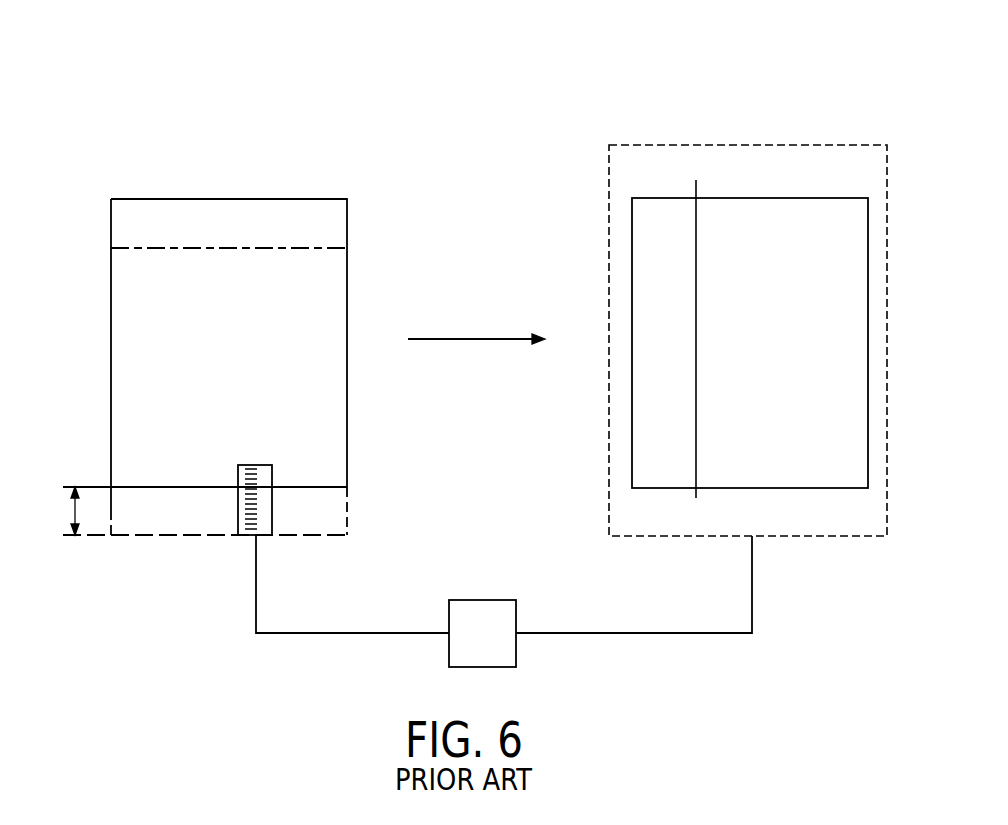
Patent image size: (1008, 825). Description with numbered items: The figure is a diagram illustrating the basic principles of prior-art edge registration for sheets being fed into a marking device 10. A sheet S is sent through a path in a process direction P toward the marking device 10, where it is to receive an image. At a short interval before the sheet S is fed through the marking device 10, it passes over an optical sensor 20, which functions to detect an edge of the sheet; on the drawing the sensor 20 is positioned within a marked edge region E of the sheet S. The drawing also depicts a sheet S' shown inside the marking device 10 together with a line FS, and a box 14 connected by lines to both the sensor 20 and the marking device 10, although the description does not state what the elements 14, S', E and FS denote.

The marking device 10 is at (663, 143).
The controller 14 is at (482, 598).
The optical sensor 20 is at (272, 513).
The sheet S is at (229, 333).
The processed sheet S' is at (750, 292).
The process direction P is at (453, 338).
The edge region E is at (72, 508).
The fold line FS is at (697, 465).